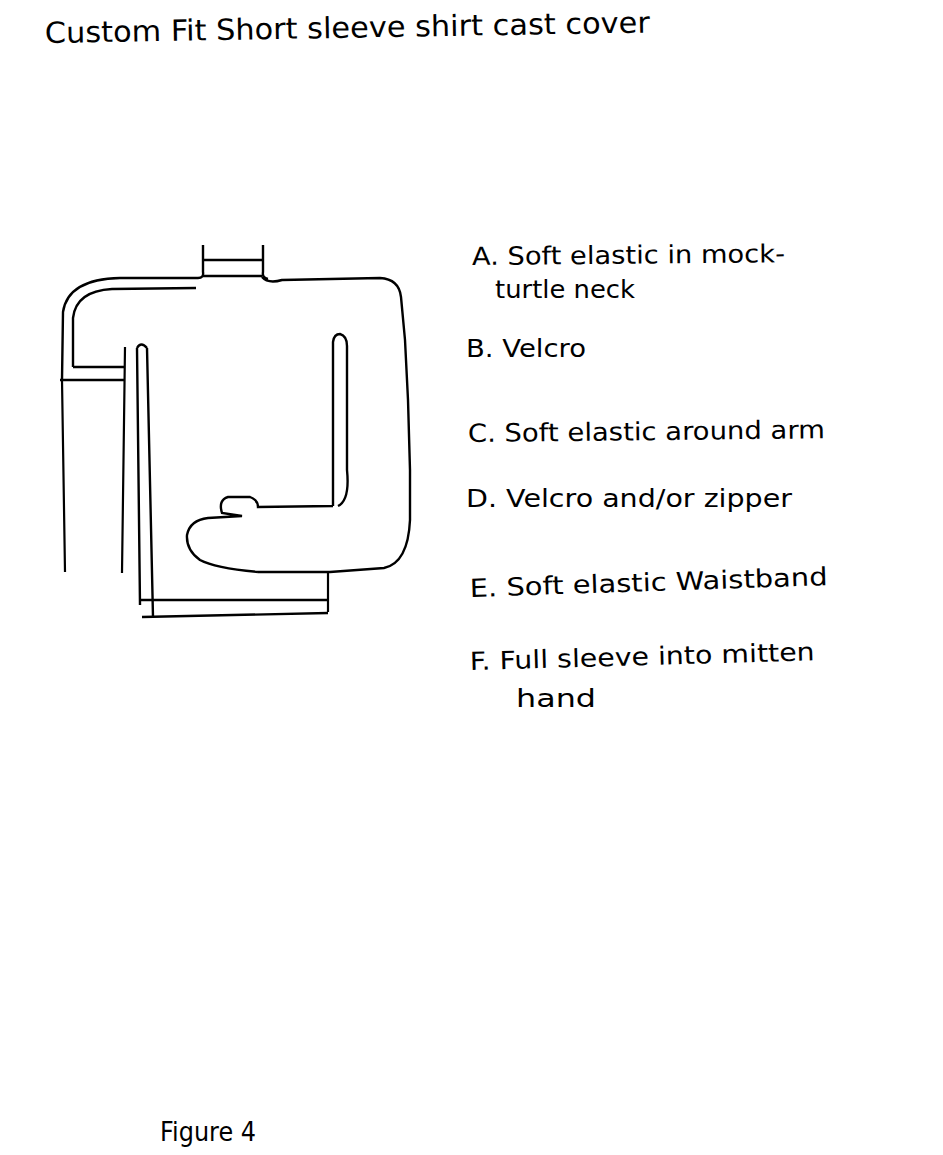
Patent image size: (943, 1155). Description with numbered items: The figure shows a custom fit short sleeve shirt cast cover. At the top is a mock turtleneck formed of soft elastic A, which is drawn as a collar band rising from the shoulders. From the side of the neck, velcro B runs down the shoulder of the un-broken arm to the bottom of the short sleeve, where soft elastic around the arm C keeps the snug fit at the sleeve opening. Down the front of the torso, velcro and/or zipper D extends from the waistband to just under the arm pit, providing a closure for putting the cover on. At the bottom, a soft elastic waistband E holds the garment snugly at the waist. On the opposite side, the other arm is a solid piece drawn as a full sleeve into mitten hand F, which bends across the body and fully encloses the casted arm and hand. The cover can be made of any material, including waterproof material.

The soft elastic in mock-turtle neck A is at (244, 262).
The velcro B is at (130, 320).
The soft elastic around arm C is at (92, 364).
The velcro and/or zipper D is at (151, 481).
The soft elastic waistband E is at (234, 597).
The full sleeve into mitten hand F is at (267, 453).